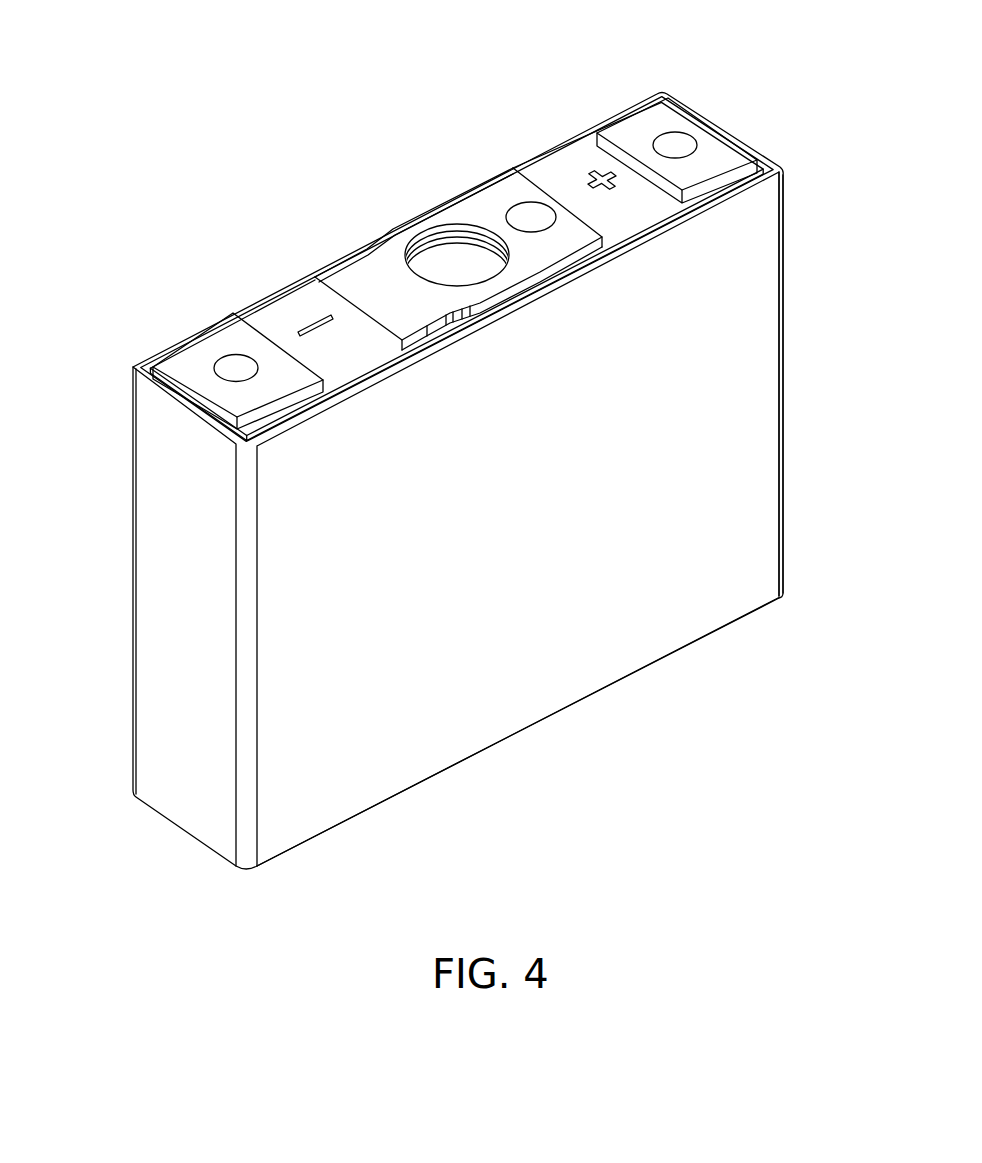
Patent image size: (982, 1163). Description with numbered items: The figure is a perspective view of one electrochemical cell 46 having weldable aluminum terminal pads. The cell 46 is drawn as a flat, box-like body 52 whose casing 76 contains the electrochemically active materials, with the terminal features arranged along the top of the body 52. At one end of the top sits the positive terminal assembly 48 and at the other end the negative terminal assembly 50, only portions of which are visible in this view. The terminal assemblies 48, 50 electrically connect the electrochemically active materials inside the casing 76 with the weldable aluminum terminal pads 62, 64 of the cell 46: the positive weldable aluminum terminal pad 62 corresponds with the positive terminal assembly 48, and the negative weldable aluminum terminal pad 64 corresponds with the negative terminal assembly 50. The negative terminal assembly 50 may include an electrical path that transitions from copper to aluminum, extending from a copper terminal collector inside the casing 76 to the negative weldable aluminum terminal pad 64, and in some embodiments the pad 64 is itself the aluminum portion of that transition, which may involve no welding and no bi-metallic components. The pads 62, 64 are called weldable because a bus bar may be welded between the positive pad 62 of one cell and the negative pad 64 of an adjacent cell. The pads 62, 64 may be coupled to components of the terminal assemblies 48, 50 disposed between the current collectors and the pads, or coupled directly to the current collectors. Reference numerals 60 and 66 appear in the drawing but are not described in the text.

The electrochemical cell 46 is at (461, 435).
The positive terminal assembly 48 is at (614, 94).
The negative terminal assembly 50 is at (190, 339).
The body 52 is at (812, 167).
The housing 60 is at (504, 464).
The positive weldable aluminum terminal pad 62 is at (720, 94).
The negative weldable aluminum terminal pad 64 is at (138, 329).
The cover 66 is at (383, 199).
The casing 76 is at (760, 617).